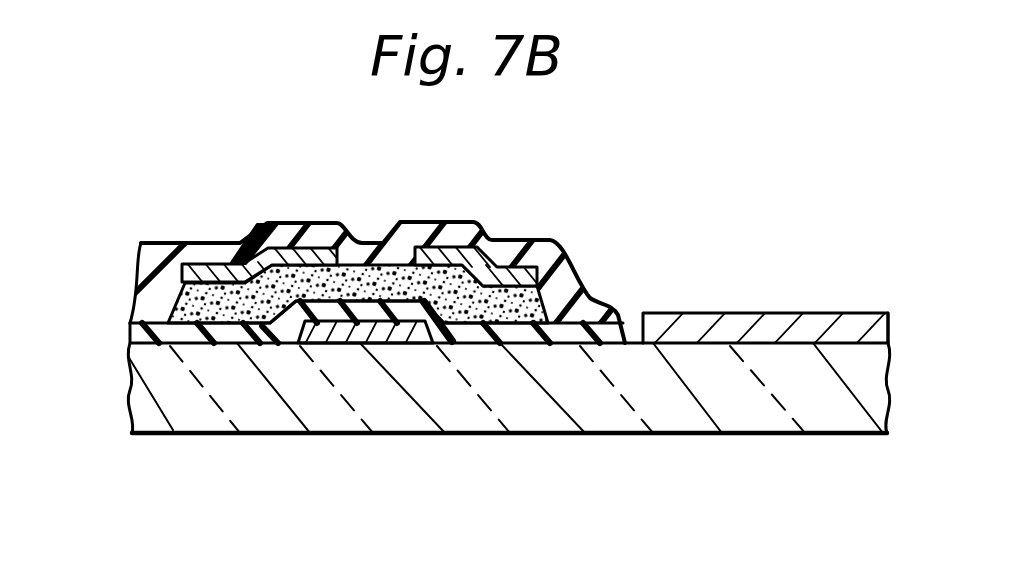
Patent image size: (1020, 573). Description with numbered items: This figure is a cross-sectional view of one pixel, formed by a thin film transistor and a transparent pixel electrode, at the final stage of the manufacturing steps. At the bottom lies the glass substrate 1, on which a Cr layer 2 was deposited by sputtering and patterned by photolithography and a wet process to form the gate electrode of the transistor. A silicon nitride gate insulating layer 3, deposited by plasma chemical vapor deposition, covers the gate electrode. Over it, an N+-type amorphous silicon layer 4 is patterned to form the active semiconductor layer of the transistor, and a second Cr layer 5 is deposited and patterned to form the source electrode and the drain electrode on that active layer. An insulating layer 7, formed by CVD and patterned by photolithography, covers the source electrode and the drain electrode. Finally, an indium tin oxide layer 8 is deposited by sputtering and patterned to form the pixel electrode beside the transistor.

The glass substrate 1 is at (687, 405).
The Cr layer 2 is at (365, 422).
The gate insulating layer 3 is at (502, 345).
The N+-type amorphous silicon layer 4 is at (345, 395).
The Cr layer 5 is at (399, 206).
The insulating layer 7 is at (328, 222).
The indium tin oxide (ITO) layer 8 is at (727, 326).